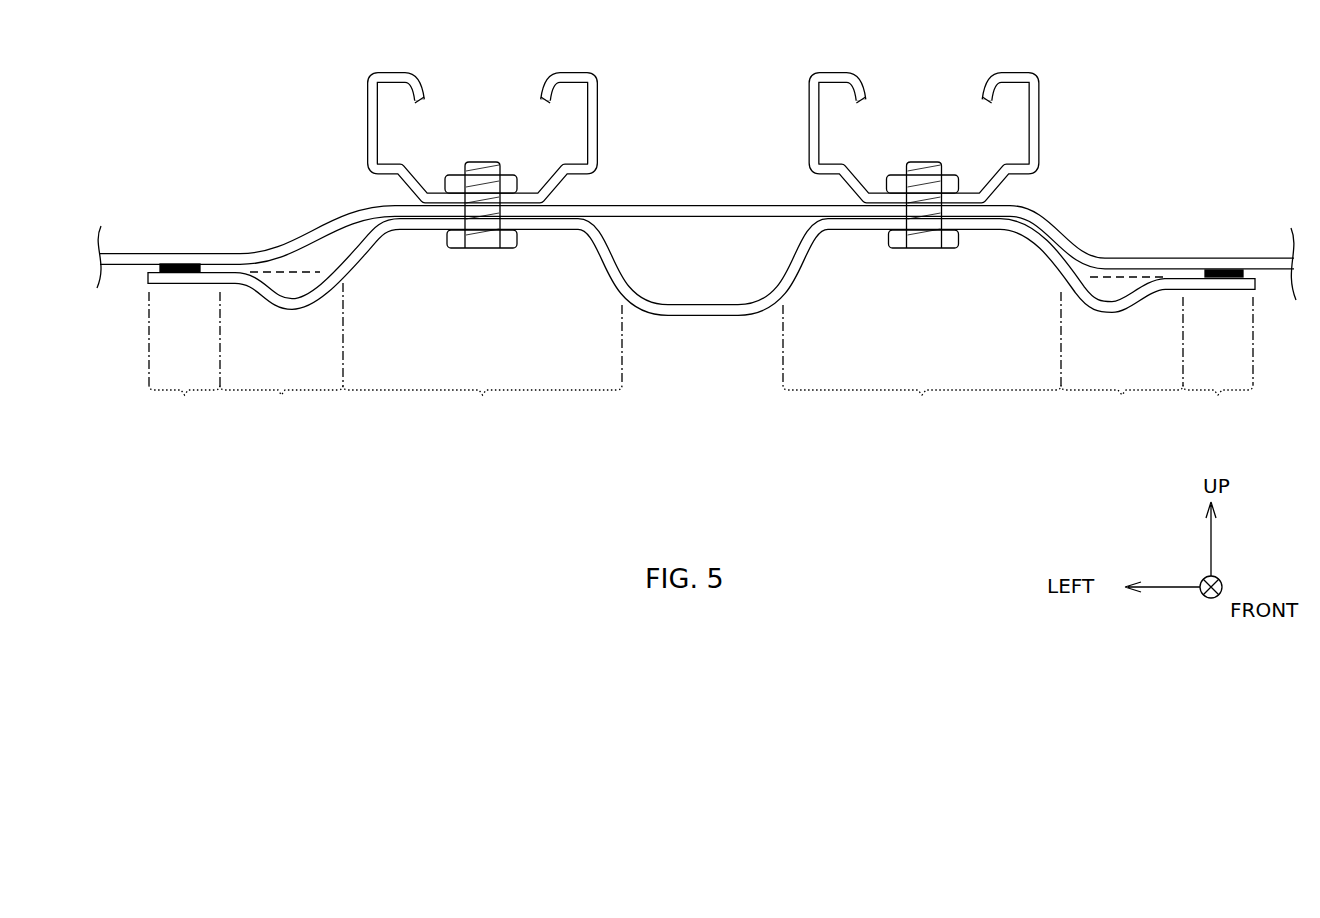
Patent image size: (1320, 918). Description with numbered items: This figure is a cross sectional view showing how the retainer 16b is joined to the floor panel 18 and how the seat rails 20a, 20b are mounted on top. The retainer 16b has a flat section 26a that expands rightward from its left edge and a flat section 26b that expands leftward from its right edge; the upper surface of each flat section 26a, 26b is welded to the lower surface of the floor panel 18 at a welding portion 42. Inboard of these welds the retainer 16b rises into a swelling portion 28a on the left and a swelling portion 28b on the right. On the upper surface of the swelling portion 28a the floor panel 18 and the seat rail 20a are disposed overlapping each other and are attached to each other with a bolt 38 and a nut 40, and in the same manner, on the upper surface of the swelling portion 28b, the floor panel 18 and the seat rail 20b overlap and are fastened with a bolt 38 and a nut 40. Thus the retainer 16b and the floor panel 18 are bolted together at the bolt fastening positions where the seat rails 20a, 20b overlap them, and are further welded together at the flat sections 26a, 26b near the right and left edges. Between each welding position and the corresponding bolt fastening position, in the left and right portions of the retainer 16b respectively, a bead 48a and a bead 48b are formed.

The floor panel 18 is at (663, 204).
The retainer 16b is at (705, 334).
The seat rail 20a is at (578, 72).
The seat rail 20b is at (1020, 72).
The bolt 38 is at (472, 249).
The nut 40 is at (458, 175).
The welding portion 42 is at (196, 263).
The flat section 26a is at (184, 358).
The flat section 26b is at (1218, 361).
The swelling portion 28a is at (482, 365).
The swelling portion 28b is at (922, 358).
The bead 48a is at (281, 354).
The bead 48b is at (1122, 361).